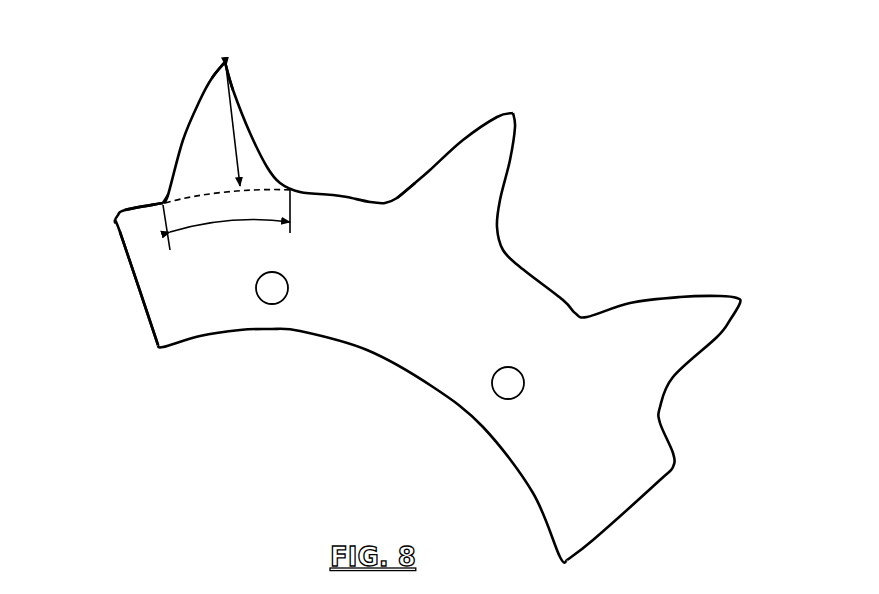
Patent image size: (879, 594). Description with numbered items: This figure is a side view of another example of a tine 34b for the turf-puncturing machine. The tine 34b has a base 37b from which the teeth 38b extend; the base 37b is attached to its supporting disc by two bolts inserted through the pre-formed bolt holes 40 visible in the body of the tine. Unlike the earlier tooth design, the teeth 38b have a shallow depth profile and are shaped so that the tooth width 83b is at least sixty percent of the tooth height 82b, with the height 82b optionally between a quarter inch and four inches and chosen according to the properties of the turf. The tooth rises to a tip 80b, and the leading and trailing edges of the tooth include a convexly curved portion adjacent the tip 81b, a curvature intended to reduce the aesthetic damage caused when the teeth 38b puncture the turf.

The tine 34b is at (604, 165).
The teeth 38b is at (428, 108).
The tooth tip 80b is at (219, 48).
The tip 81b is at (152, 197).
The tooth height 82b is at (233, 134).
The tooth width 83b is at (238, 228).
The base 37b is at (155, 287).
The bolt holes 40 is at (289, 289).